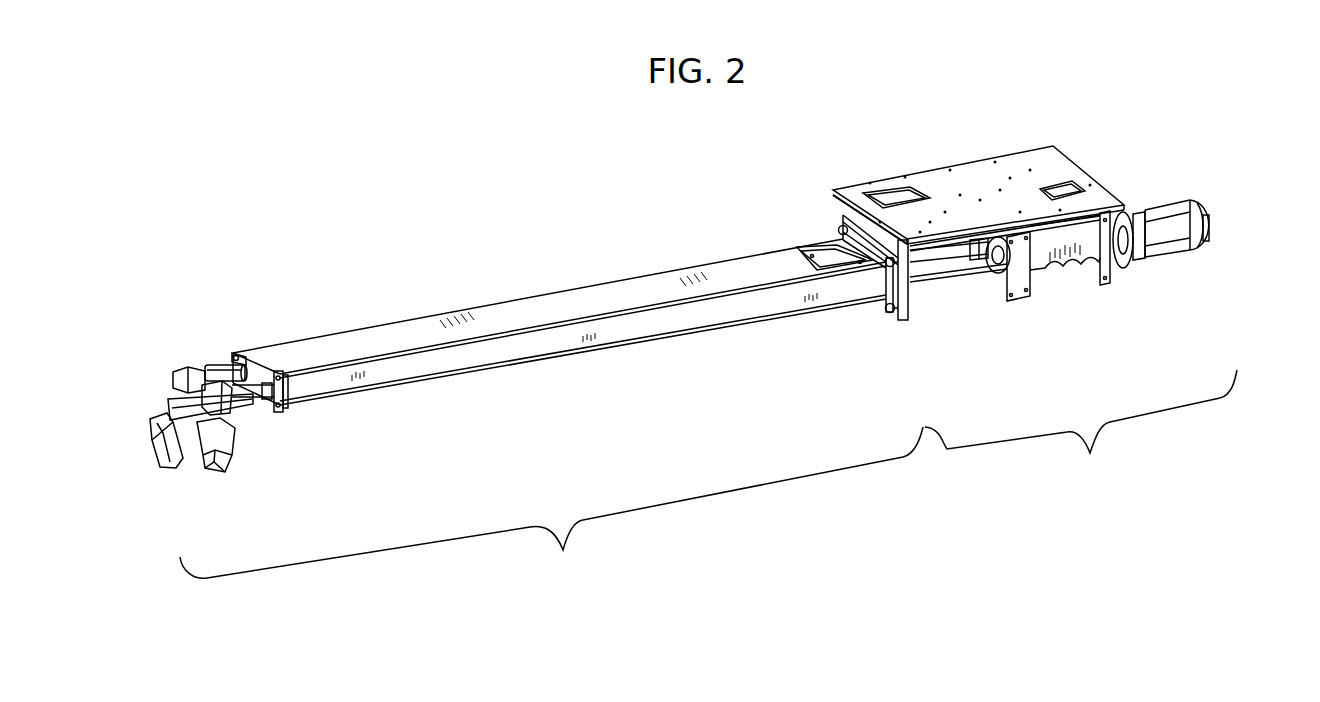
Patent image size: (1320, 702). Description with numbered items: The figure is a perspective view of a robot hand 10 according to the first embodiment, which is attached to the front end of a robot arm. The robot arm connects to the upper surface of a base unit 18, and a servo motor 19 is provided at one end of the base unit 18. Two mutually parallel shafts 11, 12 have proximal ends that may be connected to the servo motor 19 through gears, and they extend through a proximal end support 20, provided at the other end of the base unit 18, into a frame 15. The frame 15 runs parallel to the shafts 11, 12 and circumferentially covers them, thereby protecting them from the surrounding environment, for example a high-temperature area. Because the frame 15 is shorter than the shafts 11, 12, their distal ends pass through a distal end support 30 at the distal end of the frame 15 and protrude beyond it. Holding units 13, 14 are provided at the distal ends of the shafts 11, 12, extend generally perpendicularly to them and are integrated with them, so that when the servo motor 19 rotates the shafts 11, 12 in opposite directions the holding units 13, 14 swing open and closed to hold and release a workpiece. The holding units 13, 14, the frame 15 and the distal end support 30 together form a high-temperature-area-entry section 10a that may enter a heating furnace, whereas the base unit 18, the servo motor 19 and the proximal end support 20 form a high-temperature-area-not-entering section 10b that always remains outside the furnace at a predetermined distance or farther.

The robot hand 10 is at (475, 212).
The high-temperature-area-entry section 10a is at (551, 509).
The high-temperature-area-not-entering section 10b is at (1073, 352).
The shaft 11 is at (257, 390).
The shaft 12 is at (223, 372).
The holding unit 13 is at (222, 450).
The holding unit 14 is at (170, 458).
The frame 15 is at (650, 290).
The base unit 18 is at (1058, 170).
The servo motor 19 is at (1187, 213).
The proximal end support 20 is at (899, 330).
The distal end support 30 is at (589, 391).